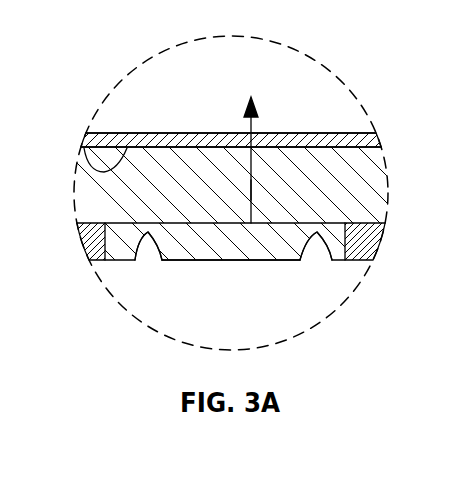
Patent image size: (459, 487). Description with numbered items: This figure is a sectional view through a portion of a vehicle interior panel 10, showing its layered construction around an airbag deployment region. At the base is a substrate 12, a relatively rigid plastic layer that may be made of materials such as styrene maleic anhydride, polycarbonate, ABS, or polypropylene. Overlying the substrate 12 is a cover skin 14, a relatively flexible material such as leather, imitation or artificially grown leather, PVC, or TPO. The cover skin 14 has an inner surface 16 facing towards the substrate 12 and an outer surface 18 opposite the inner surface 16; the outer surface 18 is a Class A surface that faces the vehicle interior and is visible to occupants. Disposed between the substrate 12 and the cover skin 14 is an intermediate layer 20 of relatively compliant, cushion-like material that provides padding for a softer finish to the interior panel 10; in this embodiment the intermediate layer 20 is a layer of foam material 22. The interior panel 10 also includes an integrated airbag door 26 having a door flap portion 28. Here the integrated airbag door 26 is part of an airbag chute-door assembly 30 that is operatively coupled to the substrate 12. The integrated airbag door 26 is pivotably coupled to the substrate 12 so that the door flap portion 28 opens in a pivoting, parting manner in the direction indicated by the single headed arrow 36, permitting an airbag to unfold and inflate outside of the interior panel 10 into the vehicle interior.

The interior panel 10 is at (297, 90).
The substrate 12 is at (372, 243).
The cover skin 14 is at (378, 140).
The inner surface 16 is at (84, 166).
The outer surface 18 is at (115, 133).
The intermediate layer 20 is at (378, 192).
The foam material 22 is at (188, 156).
The integrated airbag door 26 is at (285, 244).
The door flap portion 28 is at (193, 262).
The airbag chute-door assembly 30 is at (227, 262).
The single headed arrow 36 is at (253, 192).